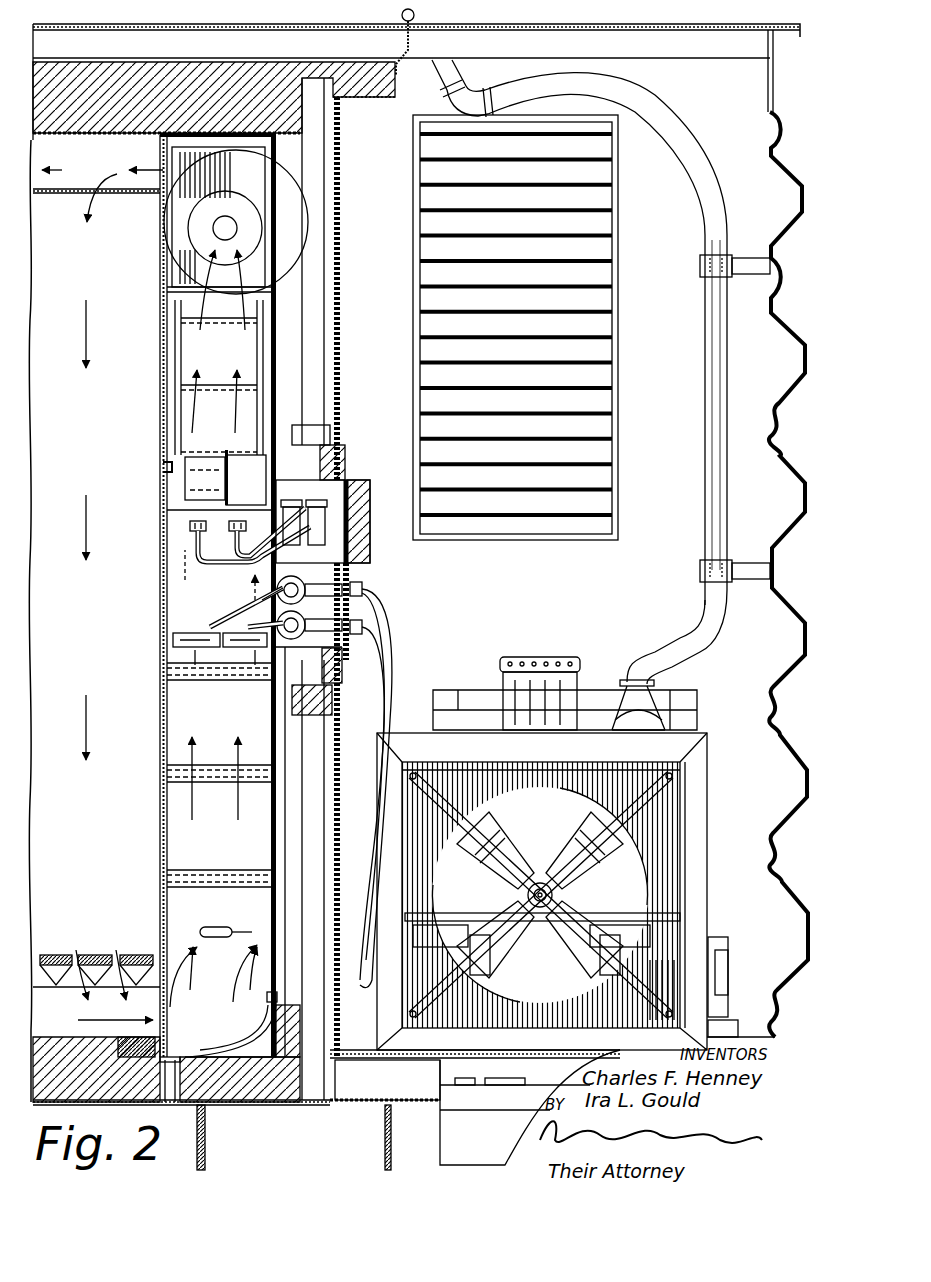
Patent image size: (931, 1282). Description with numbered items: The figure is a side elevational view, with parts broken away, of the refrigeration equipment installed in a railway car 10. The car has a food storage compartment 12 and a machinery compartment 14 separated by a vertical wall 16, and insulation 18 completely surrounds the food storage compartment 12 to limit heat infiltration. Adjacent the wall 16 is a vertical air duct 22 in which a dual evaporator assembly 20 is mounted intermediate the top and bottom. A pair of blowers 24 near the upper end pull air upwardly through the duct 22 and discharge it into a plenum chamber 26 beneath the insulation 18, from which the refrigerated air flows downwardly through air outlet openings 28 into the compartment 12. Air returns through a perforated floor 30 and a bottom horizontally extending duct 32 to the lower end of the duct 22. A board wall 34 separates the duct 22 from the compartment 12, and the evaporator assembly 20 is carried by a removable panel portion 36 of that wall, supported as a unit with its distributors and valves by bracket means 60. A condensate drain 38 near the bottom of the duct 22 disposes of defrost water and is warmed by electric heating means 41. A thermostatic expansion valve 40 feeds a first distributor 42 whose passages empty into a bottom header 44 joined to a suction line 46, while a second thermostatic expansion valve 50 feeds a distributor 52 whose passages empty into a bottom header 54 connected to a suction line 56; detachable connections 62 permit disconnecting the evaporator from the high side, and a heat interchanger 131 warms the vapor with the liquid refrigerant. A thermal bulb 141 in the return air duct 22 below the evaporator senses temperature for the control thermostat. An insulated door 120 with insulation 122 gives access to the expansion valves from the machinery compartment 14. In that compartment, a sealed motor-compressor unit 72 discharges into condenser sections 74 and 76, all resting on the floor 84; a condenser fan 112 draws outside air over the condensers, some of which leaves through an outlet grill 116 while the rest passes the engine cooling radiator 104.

The railway car 10 is at (772, 115).
The food storage compartment 12 is at (82, 427).
The machinery compartment 14 is at (672, 361).
The vertical wall 16 is at (340, 237).
The insulation 18 is at (268, 68).
The dual evaporator assembly 20 is at (178, 596).
The vertical air duct 22 is at (183, 721).
The blowers 24 is at (183, 228).
The plenum chamber 26 is at (203, 181).
The air outlet openings 28 is at (88, 196).
The perforated floor 30 is at (125, 953).
The bottom horizontally extending duct 32 is at (150, 983).
The board wall 34 is at (160, 805).
The removable panel portion 36 is at (160, 640).
The condensate drain 38 is at (170, 1080).
The thermostatic expansion valve 40 is at (327, 538).
The electric heating means 41 is at (207, 1053).
The first distributor 42 is at (190, 527).
The bottom header 44 is at (193, 648).
The suction line 46 is at (240, 620).
The second thermostatic expansion valve 50 is at (283, 500).
The distributor 52 is at (228, 552).
The bottom header 54 is at (258, 648).
The suction line 56 is at (303, 609).
The bracket means 60 is at (166, 481).
The detachable connections 62 is at (362, 622).
The sealed motor-compressor unit 72 is at (727, 950).
The condenser section 74 is at (667, 1007).
The condenser section 76 is at (440, 762).
The floor 84 is at (375, 1060).
The engine cooling radiator 104 is at (482, 693).
The condenser fan 112 is at (577, 808).
The outlet grill 116 is at (603, 247).
The door 120 is at (355, 480).
The insulation 122 is at (358, 507).
The heat interchanger 131 is at (277, 585).
The thermal bulb 141 is at (218, 926).